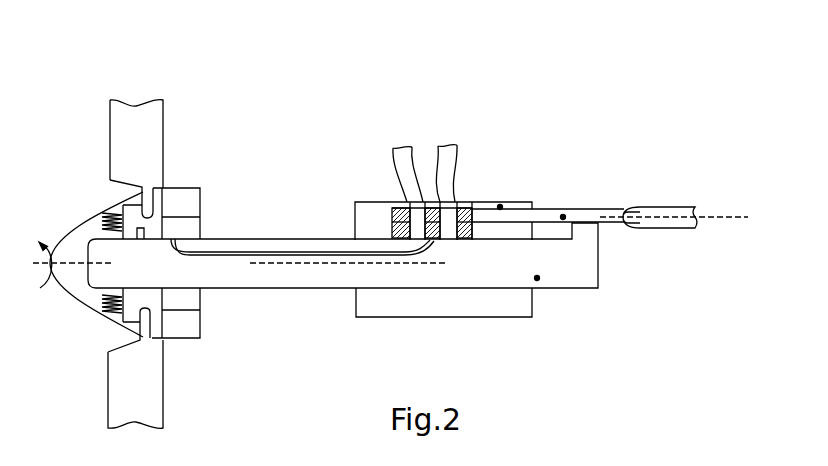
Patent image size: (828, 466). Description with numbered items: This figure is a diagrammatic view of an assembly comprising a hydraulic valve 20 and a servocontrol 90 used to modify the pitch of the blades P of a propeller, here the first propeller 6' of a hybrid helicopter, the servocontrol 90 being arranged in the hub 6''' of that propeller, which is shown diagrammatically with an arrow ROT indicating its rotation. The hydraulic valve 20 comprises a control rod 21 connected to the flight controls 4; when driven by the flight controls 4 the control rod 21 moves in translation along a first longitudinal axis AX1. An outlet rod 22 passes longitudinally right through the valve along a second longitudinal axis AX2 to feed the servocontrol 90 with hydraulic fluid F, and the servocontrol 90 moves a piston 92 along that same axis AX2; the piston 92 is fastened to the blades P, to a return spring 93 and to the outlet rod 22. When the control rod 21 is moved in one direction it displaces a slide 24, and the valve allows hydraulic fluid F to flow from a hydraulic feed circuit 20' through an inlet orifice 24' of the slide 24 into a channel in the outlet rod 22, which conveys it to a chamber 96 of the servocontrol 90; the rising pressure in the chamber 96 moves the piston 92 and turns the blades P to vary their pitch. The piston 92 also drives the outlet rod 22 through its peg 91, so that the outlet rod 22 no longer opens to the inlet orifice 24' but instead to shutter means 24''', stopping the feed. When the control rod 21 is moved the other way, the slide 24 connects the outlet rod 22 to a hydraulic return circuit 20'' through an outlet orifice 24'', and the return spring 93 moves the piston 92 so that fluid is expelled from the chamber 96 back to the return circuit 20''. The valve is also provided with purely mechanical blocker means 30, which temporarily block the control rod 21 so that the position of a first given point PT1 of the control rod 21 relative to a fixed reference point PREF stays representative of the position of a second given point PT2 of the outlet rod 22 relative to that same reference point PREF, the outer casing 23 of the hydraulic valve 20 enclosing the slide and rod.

The first propeller 6' is at (84, 67).
The hub 6''' is at (96, 287).
The blades P is at (160, 128).
The piston 92 is at (142, 187).
The return spring 93 is at (103, 225).
The servocontrol 90 is at (210, 212).
The chamber 96 is at (188, 323).
The peg 91 is at (143, 239).
The rotation direction ROT is at (67, 282).
The outlet rod 22 is at (284, 280).
The hydraulic fluid F is at (262, 240).
The slide 24 is at (436, 205).
The inlet orifice 24' is at (475, 248).
The outlet orifice 24'' is at (359, 218).
The shutter means 24''' is at (458, 279).
The hydraulic valve 20 is at (502, 123).
The hydraulic feed circuit 20' is at (440, 145).
The hydraulic return circuit 20'' is at (380, 167).
The fixed reference point PREF is at (496, 193).
The first given point PT1 is at (564, 201).
The second given point PT2 is at (536, 266).
The control rod 21 is at (600, 208).
The flight controls 4 is at (653, 198).
The first longitudinal axis AX1 is at (733, 218).
The second longitudinal axis AX2 is at (392, 267).
The outer casing 23 is at (512, 312).
The blocker means 30 is at (607, 294).